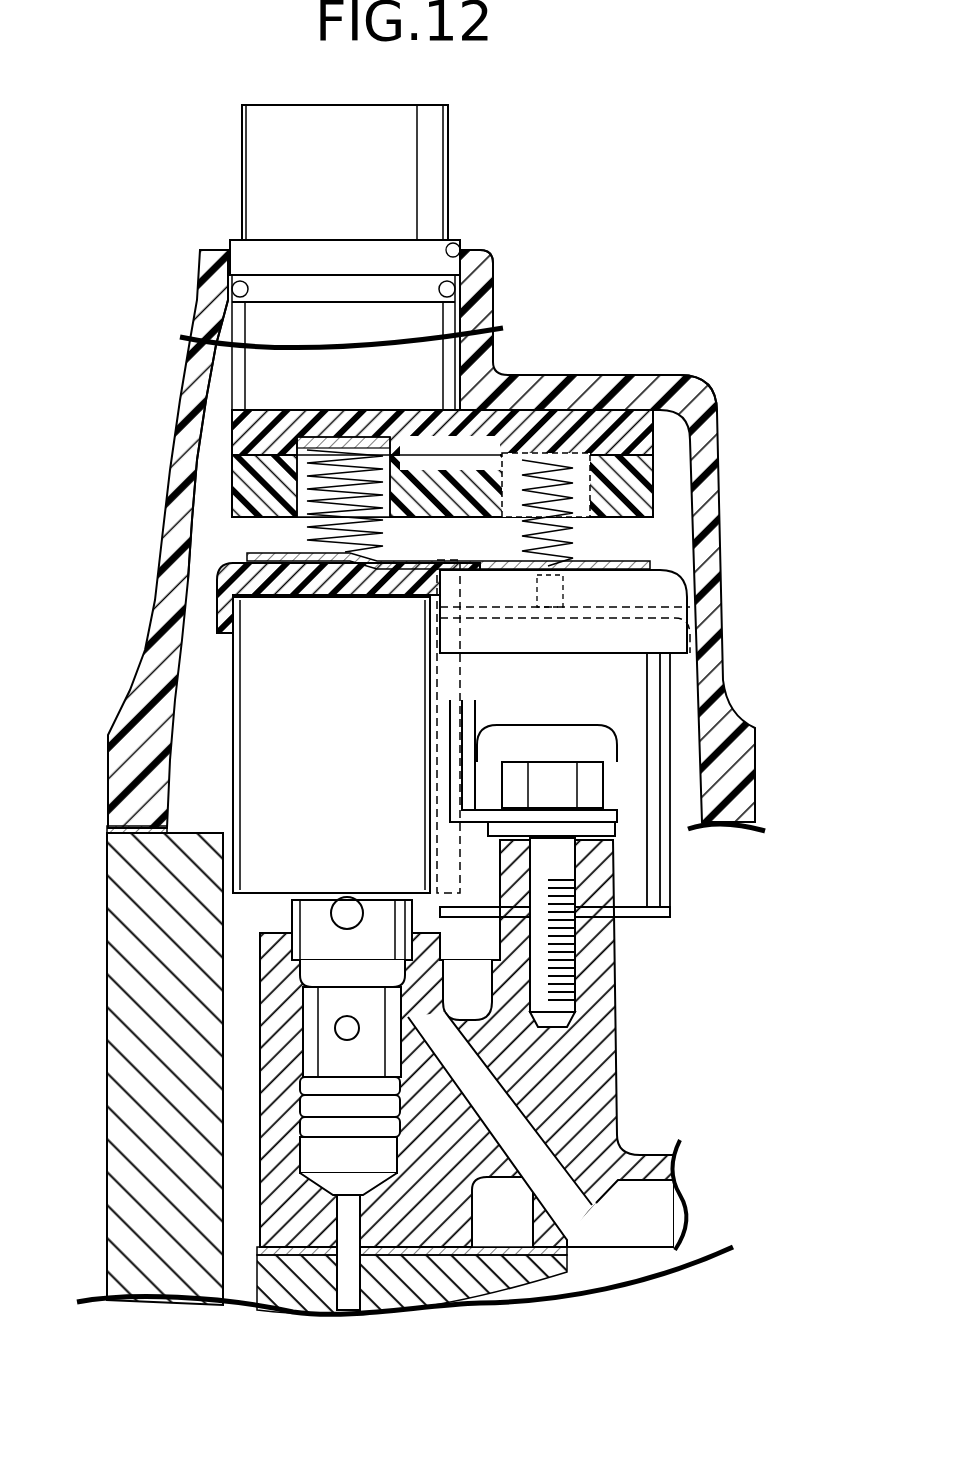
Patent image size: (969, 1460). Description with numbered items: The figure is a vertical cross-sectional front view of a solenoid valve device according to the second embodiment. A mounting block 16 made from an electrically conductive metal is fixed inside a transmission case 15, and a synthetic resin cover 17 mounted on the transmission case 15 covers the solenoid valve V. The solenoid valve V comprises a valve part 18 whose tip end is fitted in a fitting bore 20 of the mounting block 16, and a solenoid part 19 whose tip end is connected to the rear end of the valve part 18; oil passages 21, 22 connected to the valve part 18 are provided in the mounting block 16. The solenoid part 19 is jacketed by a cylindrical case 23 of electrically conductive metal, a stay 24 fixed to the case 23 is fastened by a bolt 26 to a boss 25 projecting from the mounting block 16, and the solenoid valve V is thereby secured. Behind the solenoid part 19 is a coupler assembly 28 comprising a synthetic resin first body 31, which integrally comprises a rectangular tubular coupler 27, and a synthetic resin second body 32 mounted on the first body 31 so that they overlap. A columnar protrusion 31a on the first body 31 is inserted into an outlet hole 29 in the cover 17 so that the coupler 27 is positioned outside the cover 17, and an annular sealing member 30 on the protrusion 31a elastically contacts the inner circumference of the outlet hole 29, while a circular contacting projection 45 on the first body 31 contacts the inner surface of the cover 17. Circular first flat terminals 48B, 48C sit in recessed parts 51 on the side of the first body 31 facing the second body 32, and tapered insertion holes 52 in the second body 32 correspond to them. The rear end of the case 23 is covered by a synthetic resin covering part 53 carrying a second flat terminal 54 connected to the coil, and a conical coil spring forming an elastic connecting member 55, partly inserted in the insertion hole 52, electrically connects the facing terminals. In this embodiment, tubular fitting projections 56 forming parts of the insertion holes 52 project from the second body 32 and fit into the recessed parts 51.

The transmission case 15 is at (130, 1172).
The mounting block 16 is at (600, 1117).
The cover 17 is at (178, 590).
The valve part 18 is at (292, 912).
The solenoid part 19 is at (238, 800).
The fitting bore 20 is at (300, 1060).
The oil passage 21 is at (512, 1135).
The oil passage 22 is at (358, 1212).
The case 23 is at (240, 715).
The stay 24 is at (458, 733).
The boss 25 is at (600, 893).
The bolt 26 is at (555, 778).
The coupler 27 is at (258, 178).
The coupler assembly 28 is at (222, 458).
The outlet hole 29 is at (458, 248).
The annular sealing member 30 is at (236, 291).
The first body 31 is at (255, 432).
The columnar protrusion 31a is at (440, 318).
The second body 32 is at (232, 505).
The contacting projection 45 is at (540, 408).
The first flat terminal 48B is at (332, 447).
The first flat terminal 48C is at (595, 410).
The recessed part 51 is at (728, 434).
The insertion hole 52 is at (502, 480).
The covering part 53 is at (680, 618).
The second flat terminal 54 is at (355, 555).
The elastic connecting member 55 is at (640, 498).
The fitting projection 56 is at (282, 470).
The solenoid valve V is at (676, 706).